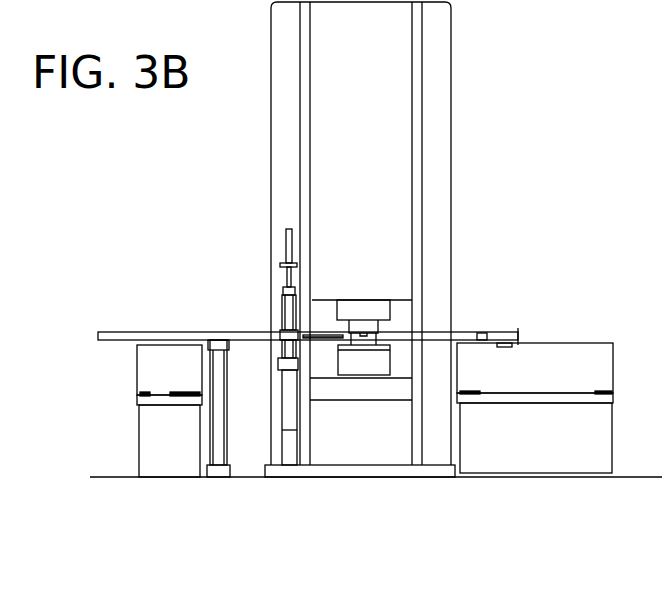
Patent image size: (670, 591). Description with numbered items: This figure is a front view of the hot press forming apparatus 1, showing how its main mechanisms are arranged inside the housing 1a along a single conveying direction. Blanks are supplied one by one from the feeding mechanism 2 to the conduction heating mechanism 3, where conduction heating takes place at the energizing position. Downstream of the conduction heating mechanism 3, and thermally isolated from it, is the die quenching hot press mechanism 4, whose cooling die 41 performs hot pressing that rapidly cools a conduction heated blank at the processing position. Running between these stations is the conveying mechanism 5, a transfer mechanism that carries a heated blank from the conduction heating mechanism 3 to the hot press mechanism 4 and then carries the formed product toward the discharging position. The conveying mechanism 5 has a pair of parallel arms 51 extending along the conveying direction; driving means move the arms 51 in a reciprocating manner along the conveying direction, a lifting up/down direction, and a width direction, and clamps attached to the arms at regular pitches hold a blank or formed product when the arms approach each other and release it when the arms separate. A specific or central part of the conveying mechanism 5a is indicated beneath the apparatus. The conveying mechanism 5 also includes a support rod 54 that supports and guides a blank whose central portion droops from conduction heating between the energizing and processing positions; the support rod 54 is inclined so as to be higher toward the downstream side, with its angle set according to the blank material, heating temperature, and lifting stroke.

The hot press forming apparatus 1 is at (586, 76).
The housing 1a is at (277, 157).
The feeding mechanism 2 is at (172, 458).
The conduction heating mechanism 3 is at (279, 305).
The hot press mechanism 4 is at (357, 296).
The cooling die 41 is at (377, 330).
The conveying mechanism 5 is at (252, 331).
The specific part of conveying mechanism 5a is at (285, 502).
The pair of parallel arms 51 is at (135, 332).
The support rod 54 is at (325, 338).